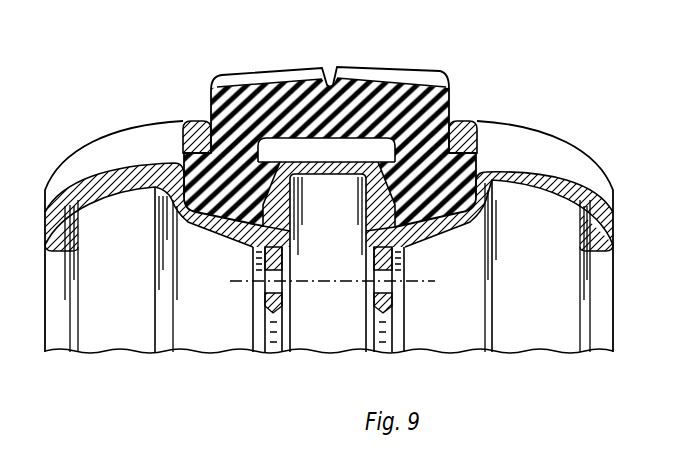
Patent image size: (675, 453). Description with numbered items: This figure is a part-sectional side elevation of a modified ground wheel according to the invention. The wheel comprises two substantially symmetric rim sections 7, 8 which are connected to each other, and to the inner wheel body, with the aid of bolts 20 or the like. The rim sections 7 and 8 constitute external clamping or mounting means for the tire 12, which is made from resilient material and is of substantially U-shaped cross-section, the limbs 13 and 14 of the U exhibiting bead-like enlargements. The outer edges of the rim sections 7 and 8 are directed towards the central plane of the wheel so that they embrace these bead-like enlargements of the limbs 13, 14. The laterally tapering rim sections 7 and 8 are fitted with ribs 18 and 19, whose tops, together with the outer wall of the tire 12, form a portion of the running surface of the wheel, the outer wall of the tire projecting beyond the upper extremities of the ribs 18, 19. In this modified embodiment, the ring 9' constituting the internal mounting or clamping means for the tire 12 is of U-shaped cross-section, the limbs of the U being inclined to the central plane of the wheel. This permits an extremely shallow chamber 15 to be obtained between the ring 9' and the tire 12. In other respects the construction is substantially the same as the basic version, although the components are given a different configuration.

The rim section 7 is at (213, 222).
The rim section 8 is at (447, 224).
The ring 9' is at (329, 257).
The tire 12 is at (395, 100).
The limb 13 is at (185, 121).
The limb 14 is at (475, 121).
The chamber 15 is at (281, 159).
The rib 18 is at (167, 236).
The rib 19 is at (489, 236).
The bolt 20 is at (321, 268).